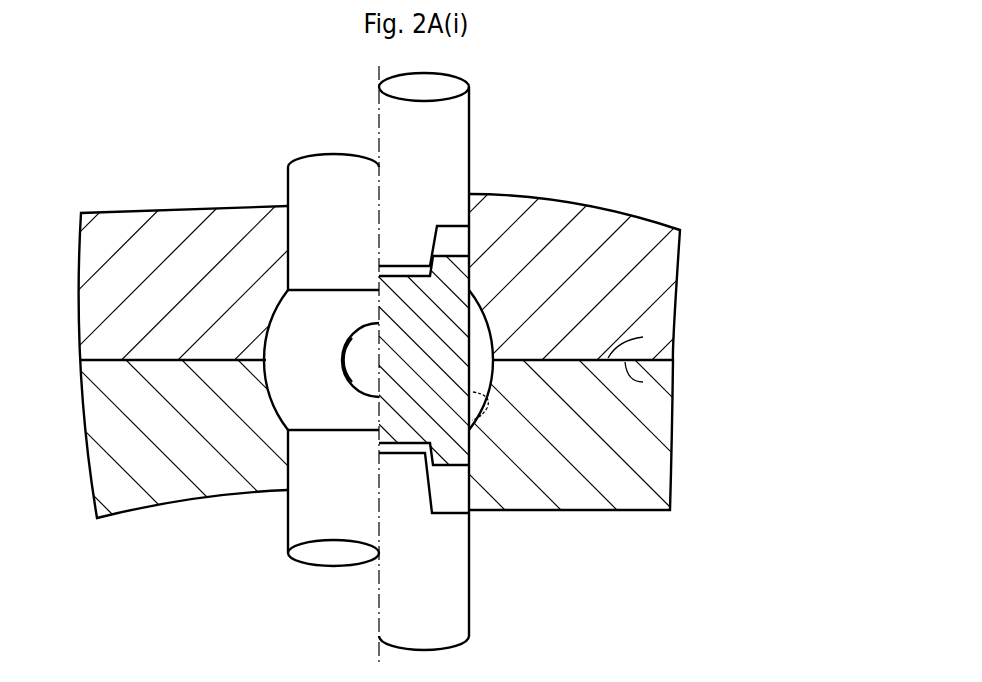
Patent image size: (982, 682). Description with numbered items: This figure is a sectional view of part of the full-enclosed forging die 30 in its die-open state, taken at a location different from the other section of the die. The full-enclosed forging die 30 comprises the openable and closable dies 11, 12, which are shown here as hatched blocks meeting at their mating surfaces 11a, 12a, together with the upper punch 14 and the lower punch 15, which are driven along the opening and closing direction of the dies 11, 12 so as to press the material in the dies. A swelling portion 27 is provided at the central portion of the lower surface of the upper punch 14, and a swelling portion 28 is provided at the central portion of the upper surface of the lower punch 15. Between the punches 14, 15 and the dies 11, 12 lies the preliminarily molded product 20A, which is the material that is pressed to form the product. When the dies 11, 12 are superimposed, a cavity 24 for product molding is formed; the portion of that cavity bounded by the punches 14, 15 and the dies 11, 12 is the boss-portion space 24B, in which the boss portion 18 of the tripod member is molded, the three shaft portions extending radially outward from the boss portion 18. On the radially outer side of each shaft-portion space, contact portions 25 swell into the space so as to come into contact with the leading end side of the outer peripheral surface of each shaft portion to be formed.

The full-enclosed forging die 30 is at (167, 182).
The upper punch 14 is at (334, 176).
The lower punch 15 is at (334, 526).
The boss portion 18 is at (317, 310).
The cavity 24 is at (274, 387).
The contact portion 25 is at (342, 357).
The swelling portion 27 is at (405, 259).
The swelling portion 28 is at (392, 475).
The preliminarily molded product 20A is at (456, 294).
The die 11 is at (573, 200).
The die 12 is at (589, 517).
The mating surface 12a is at (643, 337).
The mating surface 11a is at (643, 382).
The boss-portion space 24B is at (475, 423).